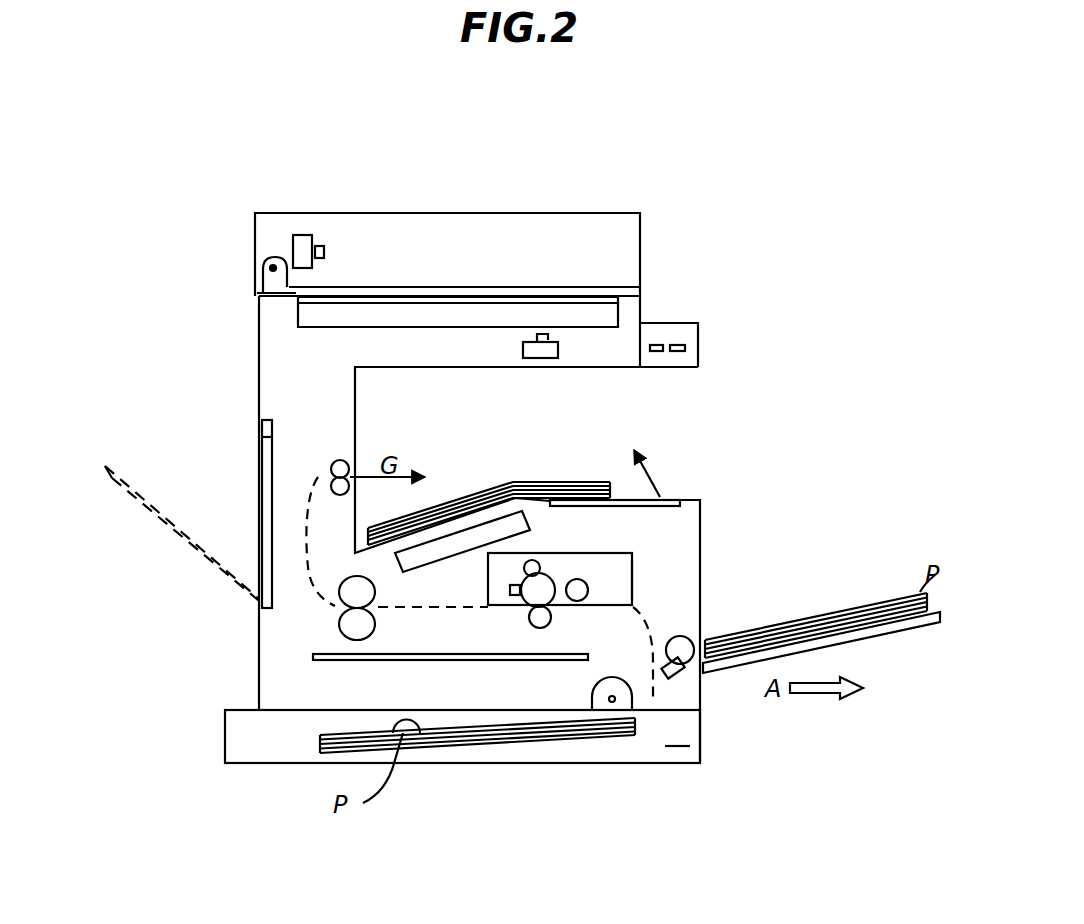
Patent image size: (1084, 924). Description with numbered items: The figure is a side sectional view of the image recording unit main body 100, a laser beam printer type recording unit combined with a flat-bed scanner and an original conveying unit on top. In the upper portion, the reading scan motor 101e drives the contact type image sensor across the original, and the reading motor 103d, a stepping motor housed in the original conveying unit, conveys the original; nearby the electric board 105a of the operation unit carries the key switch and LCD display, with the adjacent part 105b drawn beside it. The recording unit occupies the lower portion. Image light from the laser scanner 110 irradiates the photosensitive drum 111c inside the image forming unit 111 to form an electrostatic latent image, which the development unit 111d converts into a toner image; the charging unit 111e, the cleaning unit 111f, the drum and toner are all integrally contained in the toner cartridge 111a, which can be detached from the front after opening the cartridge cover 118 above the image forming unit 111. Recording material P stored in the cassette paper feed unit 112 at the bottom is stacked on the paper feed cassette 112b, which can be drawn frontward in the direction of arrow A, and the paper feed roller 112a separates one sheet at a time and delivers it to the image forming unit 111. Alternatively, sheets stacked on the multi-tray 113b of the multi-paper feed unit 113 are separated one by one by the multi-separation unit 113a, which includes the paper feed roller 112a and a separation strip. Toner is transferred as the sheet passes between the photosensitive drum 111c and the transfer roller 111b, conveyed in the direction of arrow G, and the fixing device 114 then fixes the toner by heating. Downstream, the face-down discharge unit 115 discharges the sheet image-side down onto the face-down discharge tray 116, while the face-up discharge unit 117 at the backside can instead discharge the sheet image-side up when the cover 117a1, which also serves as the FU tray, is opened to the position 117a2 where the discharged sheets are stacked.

The image recording unit main body 100 is at (735, 415).
The reading scan motor 101e is at (527, 342).
The reading motor 103d is at (303, 235).
The electric board 105a is at (658, 345).
The sensor housing 105b is at (697, 323).
The laser scanner 110 is at (437, 565).
The image forming unit 111 is at (665, 547).
The toner cartridge 111a is at (582, 588).
The transfer roller 111b is at (541, 628).
The photosensitive drum 111c is at (543, 587).
The development unit 111d is at (633, 574).
The charging unit 111e is at (537, 562).
The cleaning unit 111f is at (515, 595).
The cassette paper feed unit 112 is at (634, 748).
The paper feed roller 112a is at (638, 690).
The paper feed cassette 112b is at (678, 745).
The multi-paper feed unit 113 is at (719, 631).
The multi-separation unit 113a is at (683, 648).
The multi-tray 113b is at (845, 637).
The fixing device 114 is at (328, 614).
The face-down discharge unit 115 is at (330, 477).
The face-down discharge tray 116 is at (454, 496).
The face-up discharge unit 117 is at (257, 477).
The FU tray cover 117a1 is at (263, 437).
The FU tray open position 117a2 is at (173, 522).
The cartridge cover 118 is at (665, 500).